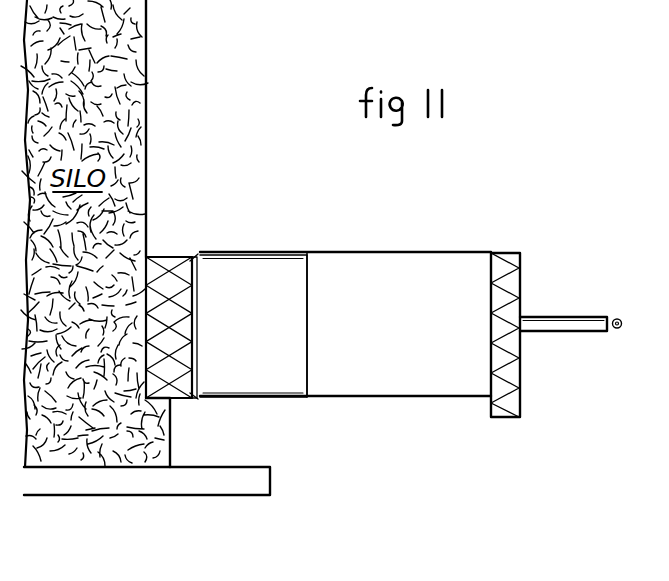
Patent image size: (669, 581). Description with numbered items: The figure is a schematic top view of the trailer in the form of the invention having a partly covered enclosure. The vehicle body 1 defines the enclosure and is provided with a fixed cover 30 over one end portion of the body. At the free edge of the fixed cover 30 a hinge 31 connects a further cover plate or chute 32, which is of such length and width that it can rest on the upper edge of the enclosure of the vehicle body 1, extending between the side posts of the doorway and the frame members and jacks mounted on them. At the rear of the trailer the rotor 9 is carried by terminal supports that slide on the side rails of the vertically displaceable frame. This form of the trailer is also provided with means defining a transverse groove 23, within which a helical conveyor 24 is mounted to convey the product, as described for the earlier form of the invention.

The vehicle body 1 is at (398, 260).
The rotor 9 is at (185, 253).
The transverse groove 23 is at (521, 378).
The helical conveyor 24 is at (521, 293).
The fixed cover 30 is at (444, 265).
The hinge 31 is at (309, 305).
The cover plate or chute 32 is at (261, 275).